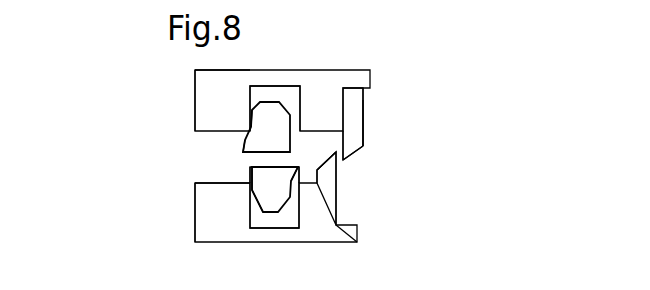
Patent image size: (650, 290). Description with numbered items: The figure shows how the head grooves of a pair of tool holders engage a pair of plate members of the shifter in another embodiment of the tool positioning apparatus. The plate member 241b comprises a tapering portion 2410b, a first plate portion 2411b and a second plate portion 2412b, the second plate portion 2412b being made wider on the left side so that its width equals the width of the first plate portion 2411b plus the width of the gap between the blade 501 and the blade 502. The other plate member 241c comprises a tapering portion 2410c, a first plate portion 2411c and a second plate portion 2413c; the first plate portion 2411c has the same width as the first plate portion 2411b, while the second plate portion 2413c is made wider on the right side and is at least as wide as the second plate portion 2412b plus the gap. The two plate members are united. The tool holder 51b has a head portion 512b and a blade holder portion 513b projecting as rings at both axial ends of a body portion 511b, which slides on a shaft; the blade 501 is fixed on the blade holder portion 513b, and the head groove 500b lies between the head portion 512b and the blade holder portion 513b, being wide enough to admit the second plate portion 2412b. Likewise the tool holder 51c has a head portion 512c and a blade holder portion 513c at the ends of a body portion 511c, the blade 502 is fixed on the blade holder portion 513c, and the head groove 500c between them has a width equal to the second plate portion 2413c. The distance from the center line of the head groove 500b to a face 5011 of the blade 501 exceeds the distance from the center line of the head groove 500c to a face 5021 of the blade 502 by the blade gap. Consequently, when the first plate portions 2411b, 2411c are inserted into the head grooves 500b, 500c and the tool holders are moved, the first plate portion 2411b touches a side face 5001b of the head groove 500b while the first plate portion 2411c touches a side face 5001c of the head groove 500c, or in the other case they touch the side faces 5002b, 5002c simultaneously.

The head groove 500b is at (398, 45).
The head groove 500c is at (349, 242).
The side face of head groove 5001b is at (250, 113).
The side face of head groove 5001c is at (251, 188).
The side face of head groove 5002b is at (366, 89).
The side face of head groove 5002c is at (358, 240).
The body portion 511b is at (299, 84).
The body portion 511c is at (279, 235).
The head portion 512b is at (243, 142).
The head portion 512c is at (251, 185).
The blade holder portion 513b is at (352, 98).
The blade holder portion 513c is at (337, 205).
The tool holder 51b is at (176, 118).
The tool holder 51c is at (164, 236).
The plate member 241b is at (273, 100).
The plate member 241c is at (268, 213).
The tapering portion 2410b is at (258, 103).
The tapering portion 2410c is at (262, 214).
The first plate portion 2411b is at (250, 118).
The first plate portion 2411c is at (252, 200).
The second plate portion 2412b is at (243, 152).
The second plate portion 2413c is at (300, 170).
The blade 501 is at (364, 122).
The face of blade 5011 is at (345, 158).
The face of blade 5021 is at (364, 104).
The blade 502 is at (320, 182).